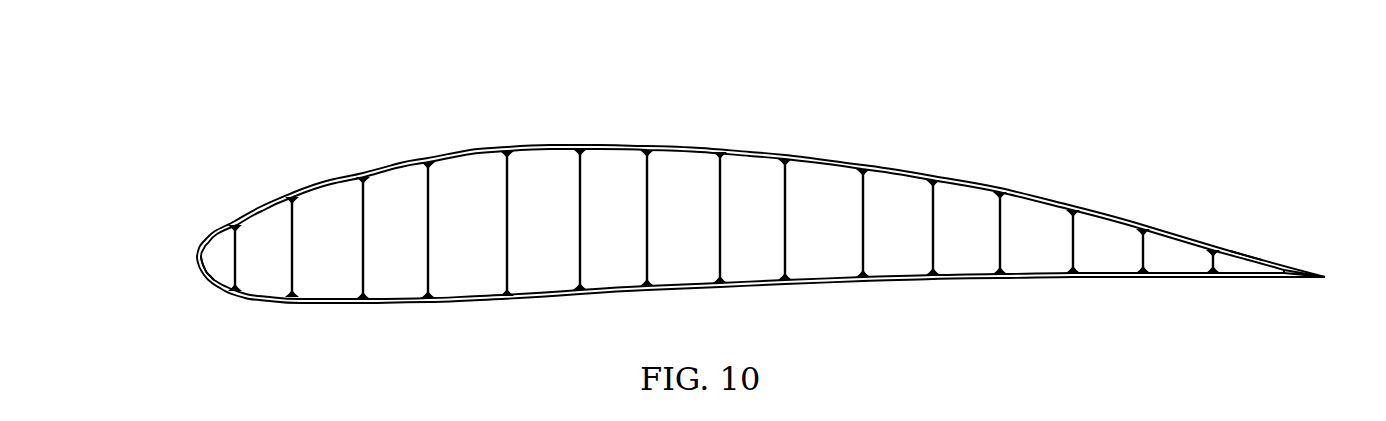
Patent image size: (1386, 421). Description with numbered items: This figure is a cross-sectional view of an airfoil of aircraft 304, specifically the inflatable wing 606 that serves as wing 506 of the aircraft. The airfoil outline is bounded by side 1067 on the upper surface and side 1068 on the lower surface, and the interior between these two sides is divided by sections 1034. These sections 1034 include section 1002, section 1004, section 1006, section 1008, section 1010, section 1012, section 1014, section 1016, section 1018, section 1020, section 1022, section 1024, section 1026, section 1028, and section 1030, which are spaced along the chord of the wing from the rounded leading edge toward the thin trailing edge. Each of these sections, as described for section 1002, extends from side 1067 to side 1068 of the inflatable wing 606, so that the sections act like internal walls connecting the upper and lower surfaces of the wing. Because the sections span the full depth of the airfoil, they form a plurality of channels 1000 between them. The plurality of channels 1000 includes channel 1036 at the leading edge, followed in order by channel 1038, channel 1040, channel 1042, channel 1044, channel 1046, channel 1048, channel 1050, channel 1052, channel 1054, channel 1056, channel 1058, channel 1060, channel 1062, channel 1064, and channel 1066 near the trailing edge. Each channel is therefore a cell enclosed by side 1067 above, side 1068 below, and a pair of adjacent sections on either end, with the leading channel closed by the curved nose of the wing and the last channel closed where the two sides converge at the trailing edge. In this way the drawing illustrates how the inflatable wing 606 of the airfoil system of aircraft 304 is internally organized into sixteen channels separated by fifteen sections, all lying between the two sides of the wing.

The plurality of channels 1000 is at (719, 221).
The aircraft 304 is at (1298, 212).
The wing 506 is at (1303, 273).
The inflatable wing 606 is at (1247, 252).
The section 1002 is at (236, 240).
The section 1004 is at (293, 212).
The section 1006 is at (364, 192).
The section 1008 is at (429, 177).
The section 1010 is at (508, 166).
The section 1012 is at (581, 164).
The section 1014 is at (648, 165).
The section 1016 is at (721, 167).
The section 1018 is at (786, 174).
The section 1020 is at (864, 184).
The section 1022 is at (934, 195).
The section 1024 is at (1001, 207).
The section 1026 is at (1074, 225).
The section 1028 is at (1144, 244).
The section 1030 is at (1214, 265).
The sections 1034 is at (182, 273).
The channel 1036 is at (220, 272).
The channel 1038 is at (272, 287).
The channel 1040 is at (335, 294).
The channel 1042 is at (397, 295).
The channel 1044 is at (465, 294).
The channel 1046 is at (542, 288).
The channel 1048 is at (608, 284).
The channel 1050 is at (677, 281).
The channel 1052 is at (757, 278).
The channel 1054 is at (835, 274).
The channel 1056 is at (910, 272).
The channel 1058 is at (975, 271).
The channel 1060 is at (1048, 269).
The channel 1062 is at (1120, 269).
The channel 1064 is at (1185, 268).
The channel 1066 is at (1248, 268).
The side 1067 is at (472, 146).
The side 1068 is at (498, 303).